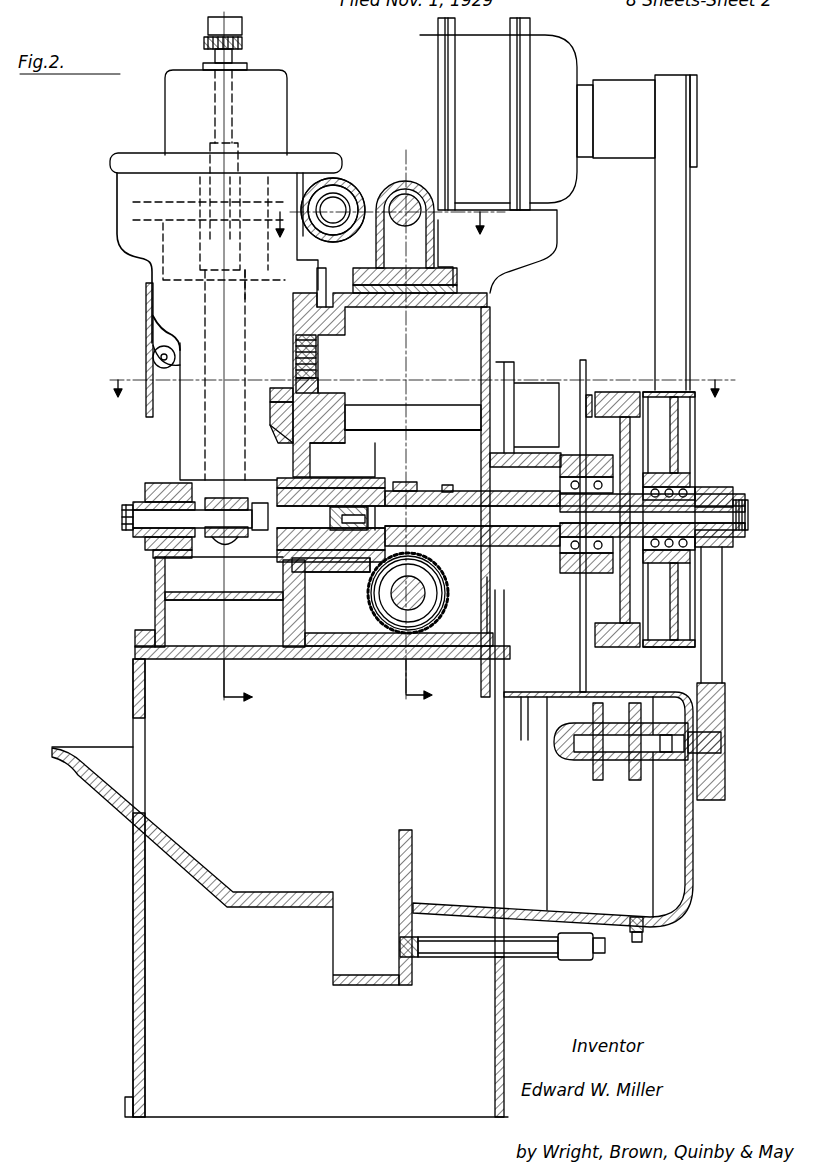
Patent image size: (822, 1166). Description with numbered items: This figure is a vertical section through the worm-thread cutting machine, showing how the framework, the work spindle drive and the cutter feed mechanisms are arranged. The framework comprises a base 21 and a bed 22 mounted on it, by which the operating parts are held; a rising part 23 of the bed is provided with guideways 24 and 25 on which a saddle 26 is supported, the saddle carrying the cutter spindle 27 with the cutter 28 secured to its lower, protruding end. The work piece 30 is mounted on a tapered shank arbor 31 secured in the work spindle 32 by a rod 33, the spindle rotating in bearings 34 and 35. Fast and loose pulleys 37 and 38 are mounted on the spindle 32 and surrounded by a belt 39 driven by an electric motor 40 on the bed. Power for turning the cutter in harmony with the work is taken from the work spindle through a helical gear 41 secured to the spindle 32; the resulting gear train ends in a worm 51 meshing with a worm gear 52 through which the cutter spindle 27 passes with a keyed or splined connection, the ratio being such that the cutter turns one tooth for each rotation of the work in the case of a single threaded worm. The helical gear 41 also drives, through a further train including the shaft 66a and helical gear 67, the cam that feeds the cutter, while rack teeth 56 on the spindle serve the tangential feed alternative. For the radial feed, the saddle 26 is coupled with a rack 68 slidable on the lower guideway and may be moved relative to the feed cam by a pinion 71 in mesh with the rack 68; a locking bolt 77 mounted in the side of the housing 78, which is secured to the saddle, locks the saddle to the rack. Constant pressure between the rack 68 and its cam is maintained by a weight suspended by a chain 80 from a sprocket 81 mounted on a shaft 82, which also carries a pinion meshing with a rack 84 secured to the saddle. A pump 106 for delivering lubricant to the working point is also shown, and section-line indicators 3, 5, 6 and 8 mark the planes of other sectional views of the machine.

The section line / bearing eye 3 is at (430, 150).
The section line / adjusting bolt 5 is at (224, 12).
The section line 6 is at (414, 381).
The section line 8 is at (378, 237).
The base 21 is at (165, 697).
The bed 22 is at (168, 580).
The rising part of the bed 23 is at (490, 335).
The guideway 24 is at (275, 425).
The guideway 25 is at (298, 305).
The saddle 26 is at (152, 297).
The cutter spindle 27 is at (205, 438).
The cutter 28 is at (205, 537).
The work piece 30 is at (238, 538).
The tapered shank arbor 31 is at (283, 532).
The work spindle 32 is at (455, 492).
The rod 33 is at (508, 515).
The bearing 34 is at (560, 545).
The bearing 35 is at (360, 590).
The fast pulley 37 is at (618, 392).
The loose pulley 38 is at (655, 390).
The belt 39 is at (668, 230).
The electric motor 40 is at (556, 80).
The helical gear 41 is at (412, 482).
The worm 51 is at (335, 195).
The worm gear 52 is at (150, 210).
The rack teeth 56 is at (140, 540).
The shaft 66a is at (428, 592).
The helical gear 67 is at (443, 590).
The rack 68 is at (298, 385).
The pinion 71 is at (298, 355).
The locking bolt 77 is at (175, 342).
The housing 78 is at (158, 345).
The chain 80 is at (580, 658).
The sprocket 81 is at (582, 380).
The shaft 82 is at (388, 415).
The rack 84 is at (269, 403).
The pump 106 is at (620, 762).